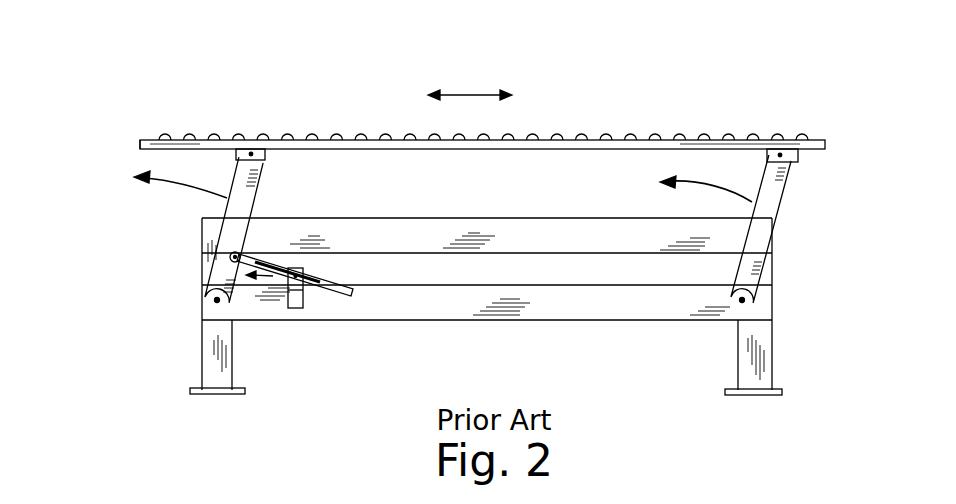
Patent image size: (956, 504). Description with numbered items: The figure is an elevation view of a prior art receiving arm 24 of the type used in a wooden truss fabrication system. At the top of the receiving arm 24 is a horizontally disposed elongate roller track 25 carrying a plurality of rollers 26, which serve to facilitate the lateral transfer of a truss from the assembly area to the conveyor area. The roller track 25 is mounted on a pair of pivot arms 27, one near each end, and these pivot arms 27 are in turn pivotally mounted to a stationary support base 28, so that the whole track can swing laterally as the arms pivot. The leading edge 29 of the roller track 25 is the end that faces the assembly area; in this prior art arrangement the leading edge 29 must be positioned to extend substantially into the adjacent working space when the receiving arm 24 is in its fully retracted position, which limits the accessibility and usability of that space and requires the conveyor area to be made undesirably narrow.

The receiving arm 24 is at (586, 95).
The roller track 25 is at (520, 140).
The rollers 26 is at (313, 138).
The pivot arms 27 is at (248, 210).
The stationary support base 28 is at (400, 305).
The leading edge 29 is at (140, 142).